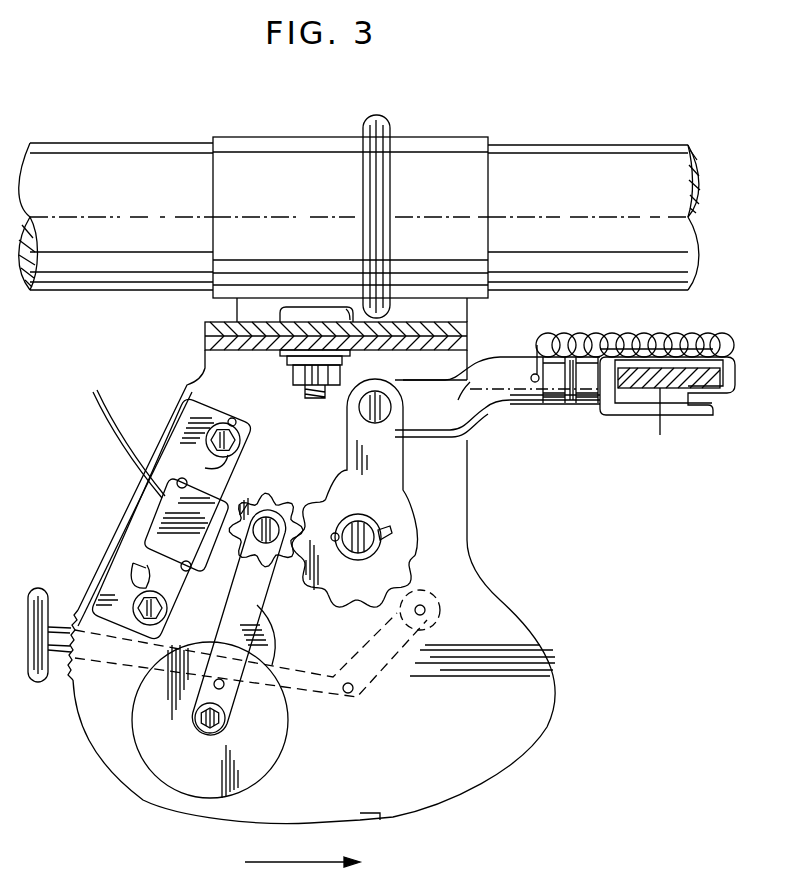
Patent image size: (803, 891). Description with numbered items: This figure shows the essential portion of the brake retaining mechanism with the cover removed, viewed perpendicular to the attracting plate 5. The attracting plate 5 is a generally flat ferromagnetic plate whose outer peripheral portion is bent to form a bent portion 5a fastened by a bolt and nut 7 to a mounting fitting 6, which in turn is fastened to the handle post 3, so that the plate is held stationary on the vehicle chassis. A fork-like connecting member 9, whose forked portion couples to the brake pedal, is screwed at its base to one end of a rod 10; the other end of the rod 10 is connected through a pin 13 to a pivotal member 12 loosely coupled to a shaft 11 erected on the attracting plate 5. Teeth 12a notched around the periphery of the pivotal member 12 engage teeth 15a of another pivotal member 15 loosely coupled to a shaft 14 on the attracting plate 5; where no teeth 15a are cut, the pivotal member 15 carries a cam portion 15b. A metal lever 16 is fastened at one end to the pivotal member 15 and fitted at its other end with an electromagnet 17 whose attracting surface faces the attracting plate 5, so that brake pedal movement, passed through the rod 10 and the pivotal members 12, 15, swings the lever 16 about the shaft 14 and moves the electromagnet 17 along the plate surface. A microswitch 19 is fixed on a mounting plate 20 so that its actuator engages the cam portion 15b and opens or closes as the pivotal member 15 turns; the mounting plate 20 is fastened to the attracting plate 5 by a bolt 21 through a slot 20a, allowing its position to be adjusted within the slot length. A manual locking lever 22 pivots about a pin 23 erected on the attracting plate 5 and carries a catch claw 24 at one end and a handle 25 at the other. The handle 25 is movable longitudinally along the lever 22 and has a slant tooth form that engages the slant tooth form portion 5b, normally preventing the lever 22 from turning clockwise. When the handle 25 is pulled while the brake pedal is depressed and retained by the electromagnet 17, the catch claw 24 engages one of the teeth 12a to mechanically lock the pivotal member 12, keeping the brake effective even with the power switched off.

The handle post 3 is at (136, 147).
The attracting plate 5 is at (500, 767).
The bent portion 5a is at (205, 345).
The slant tooth form portion 5b is at (73, 682).
The mounting fitting 6 is at (455, 141).
The bolt and nut 7 is at (341, 372).
The fork-like connecting member 9 is at (598, 405).
The rod 10 is at (498, 404).
The shaft 11 is at (375, 543).
The pivotal member 12 is at (402, 507).
The teeth 12a is at (340, 598).
The pin 13 is at (366, 410).
The shaft 14 is at (266, 541).
The pivotal member 15 is at (255, 496).
The teeth 15a is at (298, 498).
The cam portion 15b is at (248, 499).
The metal lever 16 is at (227, 703).
The electromagnet 17 is at (258, 772).
The microswitch 19 is at (152, 537).
The mounting plate 20 is at (215, 410).
The slot 20a is at (209, 462).
The bolt 21 is at (236, 430).
The manual locking lever 22 is at (310, 699).
The pin 23 is at (352, 694).
The catch claw 24 is at (441, 610).
The handle 25 is at (42, 683).